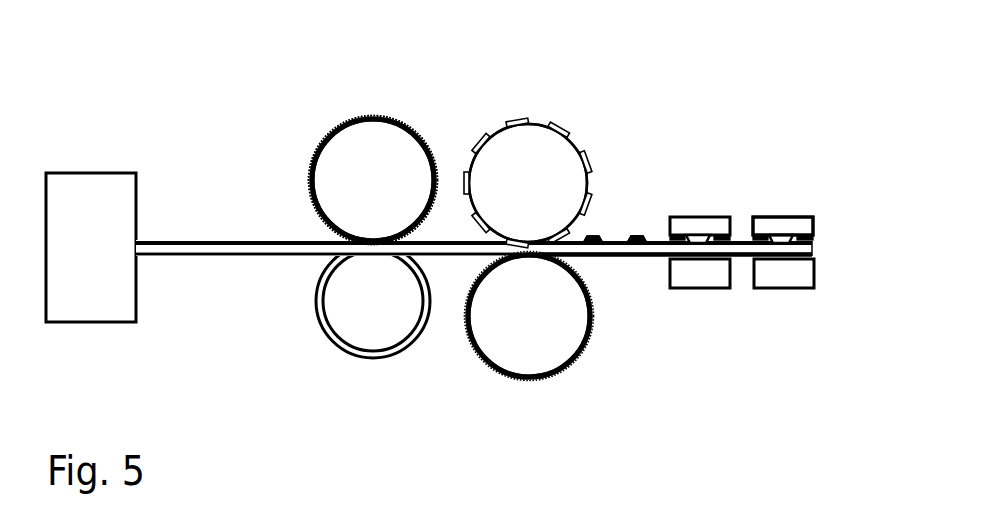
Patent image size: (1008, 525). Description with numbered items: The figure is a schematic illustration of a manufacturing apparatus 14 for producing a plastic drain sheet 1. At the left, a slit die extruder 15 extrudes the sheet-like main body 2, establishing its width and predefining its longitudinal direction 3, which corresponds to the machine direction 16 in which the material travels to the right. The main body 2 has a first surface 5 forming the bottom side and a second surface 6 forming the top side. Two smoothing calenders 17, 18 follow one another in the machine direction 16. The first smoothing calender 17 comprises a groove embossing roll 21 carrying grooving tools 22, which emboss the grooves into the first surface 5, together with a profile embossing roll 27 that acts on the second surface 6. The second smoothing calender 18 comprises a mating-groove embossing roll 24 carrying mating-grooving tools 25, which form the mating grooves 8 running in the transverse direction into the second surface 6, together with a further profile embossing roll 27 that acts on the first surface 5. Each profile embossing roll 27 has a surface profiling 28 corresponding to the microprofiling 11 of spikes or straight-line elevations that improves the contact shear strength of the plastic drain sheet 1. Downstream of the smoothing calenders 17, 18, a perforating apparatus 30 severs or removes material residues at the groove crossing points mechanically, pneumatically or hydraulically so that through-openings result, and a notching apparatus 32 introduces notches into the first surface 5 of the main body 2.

The plastic drain sheet 1 is at (615, 222).
The sheet-like main body 2 is at (270, 248).
The longitudinal direction 3 is at (632, 367).
The first surface 5 is at (199, 258).
The second surface 6 is at (234, 240).
The mating grooves 8 is at (650, 242).
The microprofiling 11 is at (632, 237).
The manufacturing apparatus 14 is at (277, 92).
The slit die extruder 15 is at (91, 183).
The machine direction 16 is at (615, 349).
The first smoothing calender 17 is at (394, 116).
The second smoothing calender 18 is at (528, 120).
The groove embossing roll 21 is at (368, 333).
The grooving tools 22 is at (390, 353).
The mating-groove embossing roll 24 is at (542, 147).
The mating-grooving tools 25 is at (501, 127).
The profile embossing rolls 27 is at (350, 150).
The surface profiling 28 is at (360, 118).
The perforating apparatus 30 is at (710, 223).
The notching apparatus 32 is at (790, 225).